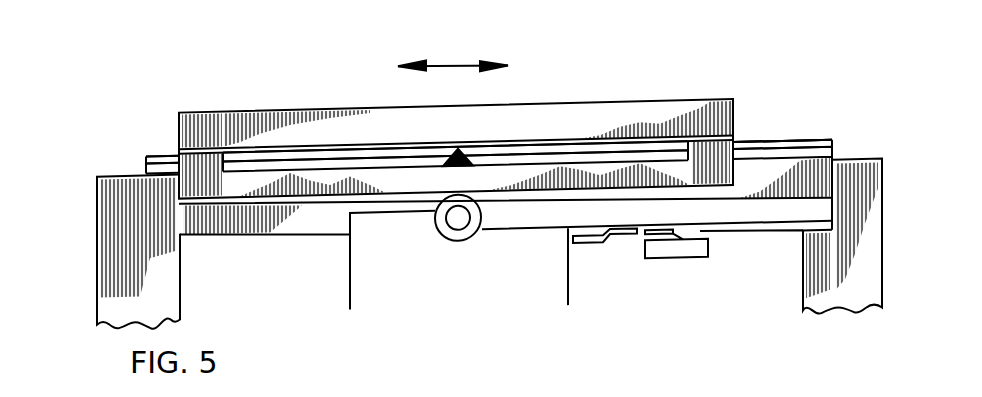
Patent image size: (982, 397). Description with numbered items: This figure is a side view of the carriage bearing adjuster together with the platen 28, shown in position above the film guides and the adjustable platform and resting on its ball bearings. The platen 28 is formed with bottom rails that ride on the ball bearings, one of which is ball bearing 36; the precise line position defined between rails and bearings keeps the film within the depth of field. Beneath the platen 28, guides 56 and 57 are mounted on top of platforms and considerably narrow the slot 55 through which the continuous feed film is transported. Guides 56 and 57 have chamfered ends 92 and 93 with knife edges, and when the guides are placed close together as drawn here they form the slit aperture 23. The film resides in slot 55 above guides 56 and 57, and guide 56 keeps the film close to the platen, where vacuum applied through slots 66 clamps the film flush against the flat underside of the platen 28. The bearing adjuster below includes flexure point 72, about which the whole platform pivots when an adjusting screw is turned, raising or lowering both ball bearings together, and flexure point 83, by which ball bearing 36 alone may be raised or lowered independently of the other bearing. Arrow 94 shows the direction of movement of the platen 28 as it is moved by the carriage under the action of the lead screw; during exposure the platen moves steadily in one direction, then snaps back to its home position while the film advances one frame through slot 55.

The slit aperture 23 is at (460, 164).
The platen 28 is at (588, 95).
The ball bearing 36 is at (463, 248).
The slot 55 is at (233, 154).
The guide 56 is at (812, 163).
The guide 57 is at (146, 164).
The slots 66 is at (643, 138).
The flexure point 72 is at (690, 267).
The flexure point 83 is at (607, 263).
The chamfered end 92 is at (480, 165).
The chamfered end 93 is at (440, 164).
The arrow 94 is at (448, 74).